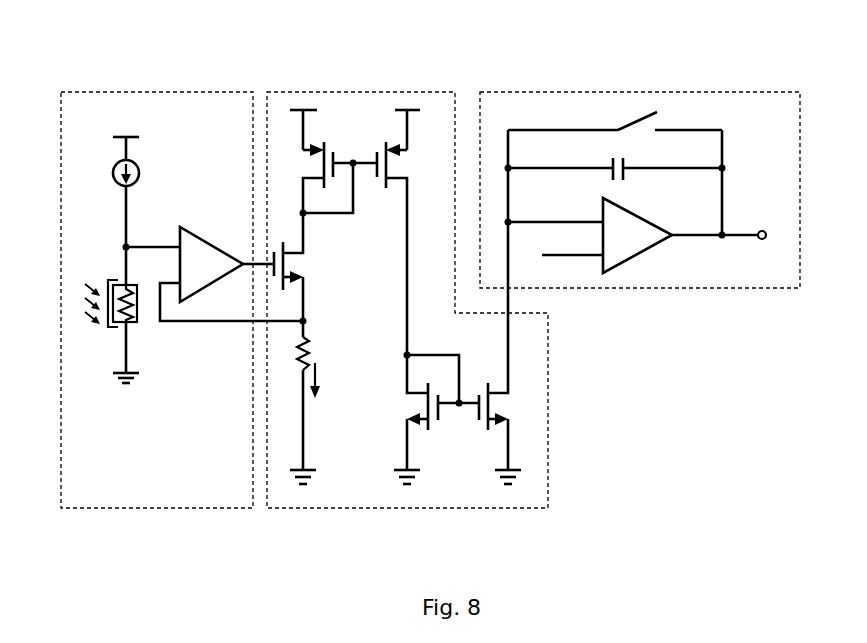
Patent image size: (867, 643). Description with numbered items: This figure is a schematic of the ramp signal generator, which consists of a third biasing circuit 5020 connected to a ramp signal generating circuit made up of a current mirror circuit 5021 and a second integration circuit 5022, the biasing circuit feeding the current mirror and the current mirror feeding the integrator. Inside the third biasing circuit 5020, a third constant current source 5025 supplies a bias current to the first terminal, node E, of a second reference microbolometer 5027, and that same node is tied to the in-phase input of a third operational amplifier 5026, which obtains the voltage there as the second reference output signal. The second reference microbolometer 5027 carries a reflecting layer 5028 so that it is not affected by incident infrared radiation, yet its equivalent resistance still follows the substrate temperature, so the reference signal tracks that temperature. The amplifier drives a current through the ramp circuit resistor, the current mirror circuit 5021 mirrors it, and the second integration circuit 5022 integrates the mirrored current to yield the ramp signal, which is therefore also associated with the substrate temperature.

The third biasing circuit 5020 is at (182, 280).
The current mirror circuit 5021 is at (407, 280).
The second integration circuit 5022 is at (640, 169).
The third constant current source 5025 is at (166, 158).
The third operational amplifier 5026 is at (216, 238).
The second reference microbolometer 5027 is at (172, 328).
The reflecting layer 5028 is at (158, 343).